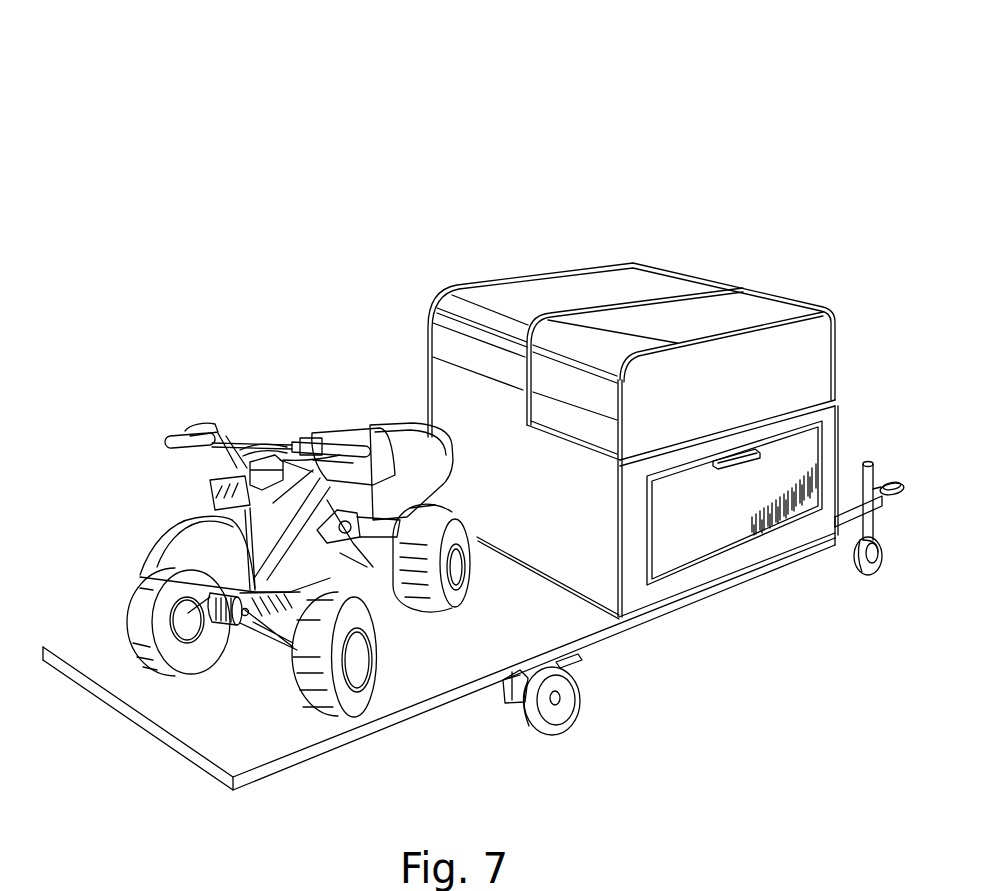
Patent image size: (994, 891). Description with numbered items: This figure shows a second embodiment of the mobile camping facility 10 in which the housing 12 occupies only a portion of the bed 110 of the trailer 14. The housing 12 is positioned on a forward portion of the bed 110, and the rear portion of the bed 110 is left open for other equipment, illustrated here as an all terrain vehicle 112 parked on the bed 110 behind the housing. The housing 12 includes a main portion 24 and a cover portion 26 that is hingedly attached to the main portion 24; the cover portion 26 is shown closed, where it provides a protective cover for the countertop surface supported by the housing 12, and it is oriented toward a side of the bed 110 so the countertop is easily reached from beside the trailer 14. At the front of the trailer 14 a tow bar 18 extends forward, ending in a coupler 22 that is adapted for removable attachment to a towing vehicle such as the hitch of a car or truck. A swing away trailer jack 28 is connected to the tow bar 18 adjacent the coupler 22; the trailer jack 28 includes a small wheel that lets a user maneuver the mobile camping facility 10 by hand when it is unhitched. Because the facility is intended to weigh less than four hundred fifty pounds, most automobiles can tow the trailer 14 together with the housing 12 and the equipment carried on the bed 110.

The mobile camping facility 10 is at (558, 102).
The housing 12 is at (548, 168).
The trailer 14 is at (765, 632).
The tow bar 18 is at (848, 520).
The coupler 22 is at (895, 482).
The main portion 24 is at (667, 278).
The cover portion 26 is at (787, 300).
The swing away trailer jack 28 is at (877, 518).
The bed 110 is at (108, 620).
The all terrain vehicle 112 is at (203, 527).